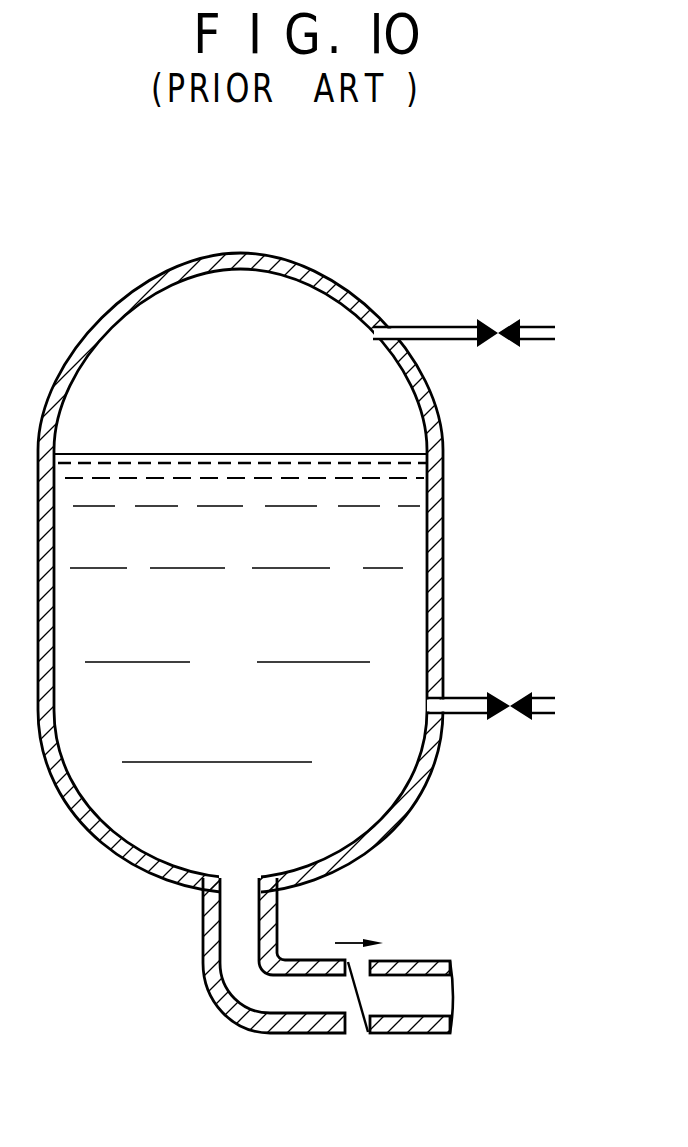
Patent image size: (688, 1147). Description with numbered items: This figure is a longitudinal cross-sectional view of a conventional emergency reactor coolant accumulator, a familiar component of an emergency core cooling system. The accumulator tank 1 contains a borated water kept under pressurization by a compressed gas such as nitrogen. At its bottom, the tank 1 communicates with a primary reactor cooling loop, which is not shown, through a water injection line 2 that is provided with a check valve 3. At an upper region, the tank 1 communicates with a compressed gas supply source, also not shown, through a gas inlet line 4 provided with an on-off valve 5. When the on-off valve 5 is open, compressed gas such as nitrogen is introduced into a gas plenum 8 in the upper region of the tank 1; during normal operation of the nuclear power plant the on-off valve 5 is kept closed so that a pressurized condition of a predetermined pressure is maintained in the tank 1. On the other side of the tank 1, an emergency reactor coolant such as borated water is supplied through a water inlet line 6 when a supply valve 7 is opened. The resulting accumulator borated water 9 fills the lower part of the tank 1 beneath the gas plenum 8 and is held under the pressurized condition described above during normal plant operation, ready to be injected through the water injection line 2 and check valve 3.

The tank 1 is at (253, 253).
The water injection line 2 is at (228, 1008).
The check valve 3 is at (357, 1020).
The gas inlet line 4 is at (437, 326).
The on-off valve 5 is at (488, 322).
The water inlet line 6 is at (467, 697).
The supply valve 7 is at (508, 694).
The gas plenum 8 is at (133, 353).
The accumulator borated water 9 is at (402, 532).